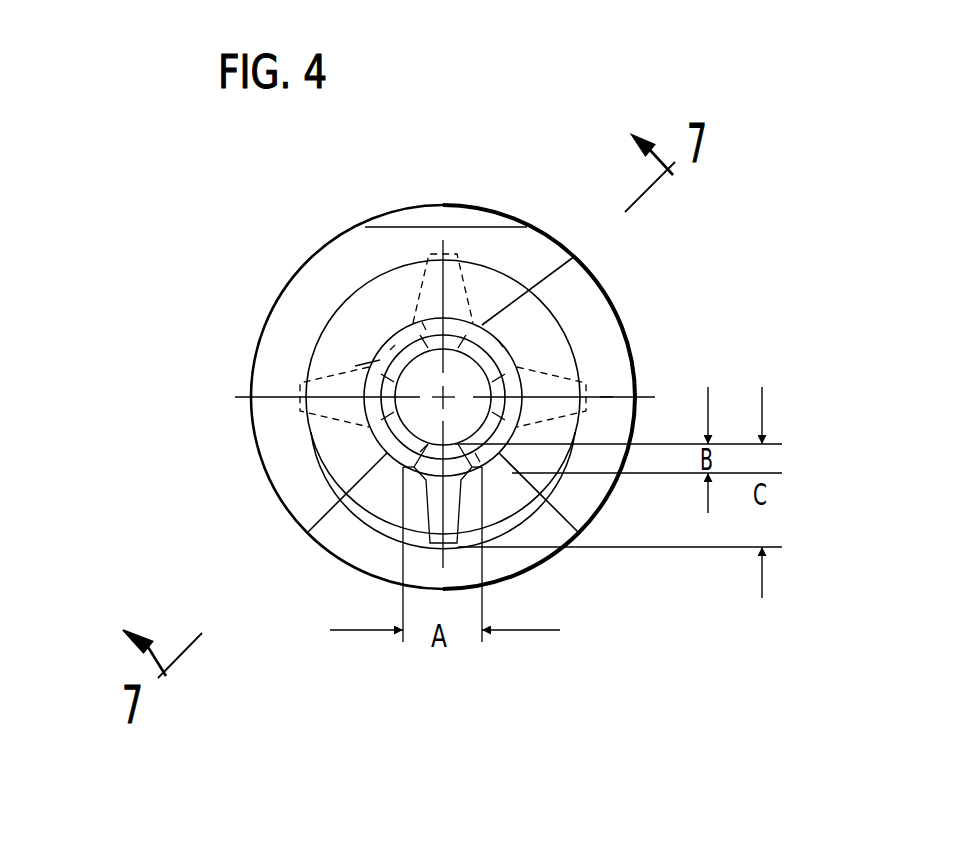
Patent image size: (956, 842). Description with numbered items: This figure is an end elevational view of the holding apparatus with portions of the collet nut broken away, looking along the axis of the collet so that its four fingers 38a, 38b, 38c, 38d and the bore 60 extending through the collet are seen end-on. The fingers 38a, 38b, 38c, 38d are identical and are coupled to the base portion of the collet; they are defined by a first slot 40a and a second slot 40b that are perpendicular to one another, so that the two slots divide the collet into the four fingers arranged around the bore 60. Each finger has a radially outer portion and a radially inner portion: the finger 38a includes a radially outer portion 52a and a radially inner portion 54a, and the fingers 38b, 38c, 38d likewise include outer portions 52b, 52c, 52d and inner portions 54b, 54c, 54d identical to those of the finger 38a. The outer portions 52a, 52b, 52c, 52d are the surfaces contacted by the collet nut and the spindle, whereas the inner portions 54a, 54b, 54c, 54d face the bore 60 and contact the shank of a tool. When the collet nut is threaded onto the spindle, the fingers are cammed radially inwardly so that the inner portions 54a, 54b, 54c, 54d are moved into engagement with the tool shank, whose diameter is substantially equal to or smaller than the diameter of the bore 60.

The finger 38a is at (455, 297).
The finger 38b is at (530, 375).
The finger 38c is at (300, 394).
The finger 38d is at (403, 472).
The first slot 40a is at (390, 350).
The second slot 40b is at (500, 347).
The radially outer portion 52a is at (450, 254).
The radially outer portion 52b is at (595, 395).
The radially outer portion 52c is at (298, 405).
The radially outer portion 52d is at (430, 546).
The radially inner portion 54a is at (422, 322).
The radially inner portion 54b is at (613, 397).
The radially inner portion 54c is at (355, 367).
The radially inner portion 54d is at (420, 452).
The bore 60 is at (475, 453).